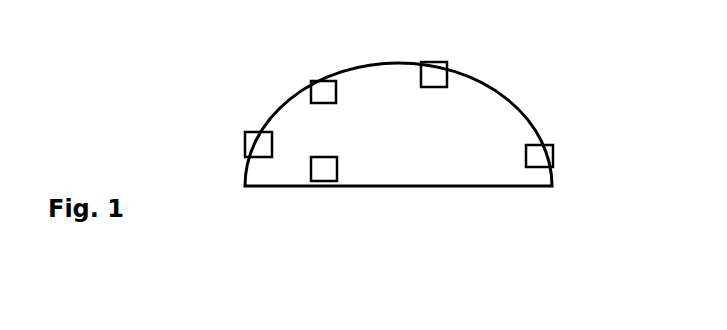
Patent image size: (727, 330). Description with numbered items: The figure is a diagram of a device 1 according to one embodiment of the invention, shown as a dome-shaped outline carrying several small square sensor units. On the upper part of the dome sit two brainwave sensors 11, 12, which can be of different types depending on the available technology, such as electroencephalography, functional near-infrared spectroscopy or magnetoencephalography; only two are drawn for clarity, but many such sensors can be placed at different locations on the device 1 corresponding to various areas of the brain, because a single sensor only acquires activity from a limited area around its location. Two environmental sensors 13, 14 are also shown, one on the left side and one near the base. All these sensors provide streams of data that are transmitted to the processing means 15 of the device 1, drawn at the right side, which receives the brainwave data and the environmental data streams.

The device 1 is at (502, 92).
The brainwave sensor 11 is at (312, 82).
The brainwave sensor 12 is at (422, 62).
The environmental sensor 13 is at (245, 143).
The environmental sensor 14 is at (317, 180).
The processing means 15 is at (553, 152).